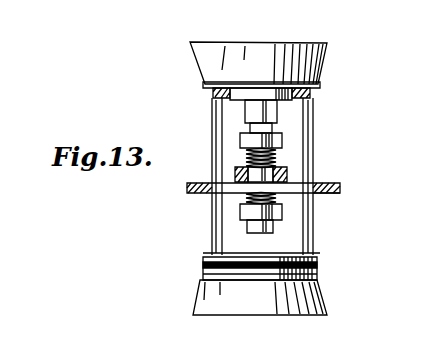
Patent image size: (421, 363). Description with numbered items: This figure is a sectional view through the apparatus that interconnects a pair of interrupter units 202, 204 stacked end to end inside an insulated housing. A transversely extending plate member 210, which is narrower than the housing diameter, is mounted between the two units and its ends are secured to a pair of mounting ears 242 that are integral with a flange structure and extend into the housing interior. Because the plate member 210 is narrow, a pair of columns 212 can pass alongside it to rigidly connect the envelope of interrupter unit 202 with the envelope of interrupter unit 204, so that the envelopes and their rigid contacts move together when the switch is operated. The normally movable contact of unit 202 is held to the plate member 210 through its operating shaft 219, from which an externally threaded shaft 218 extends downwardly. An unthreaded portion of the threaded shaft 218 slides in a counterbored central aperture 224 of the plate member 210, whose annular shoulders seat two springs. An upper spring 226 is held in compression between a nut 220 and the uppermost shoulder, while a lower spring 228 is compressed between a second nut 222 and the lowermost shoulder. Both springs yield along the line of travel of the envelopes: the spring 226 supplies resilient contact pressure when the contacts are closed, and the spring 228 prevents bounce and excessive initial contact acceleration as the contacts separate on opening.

The interrupter unit 202 is at (203, 52).
The interrupter unit 204 is at (200, 303).
The columns 212 is at (212, 249).
The externally threaded shaft 218 is at (276, 131).
The operating shaft 219 is at (246, 124).
The nut 220 is at (282, 142).
The spring 226 is at (244, 156).
The central aperture 224 is at (235, 172).
The plate member 210 is at (283, 174).
The mounting ears 242 is at (328, 194).
The spring 228 is at (240, 196).
The nut 222 is at (240, 212).